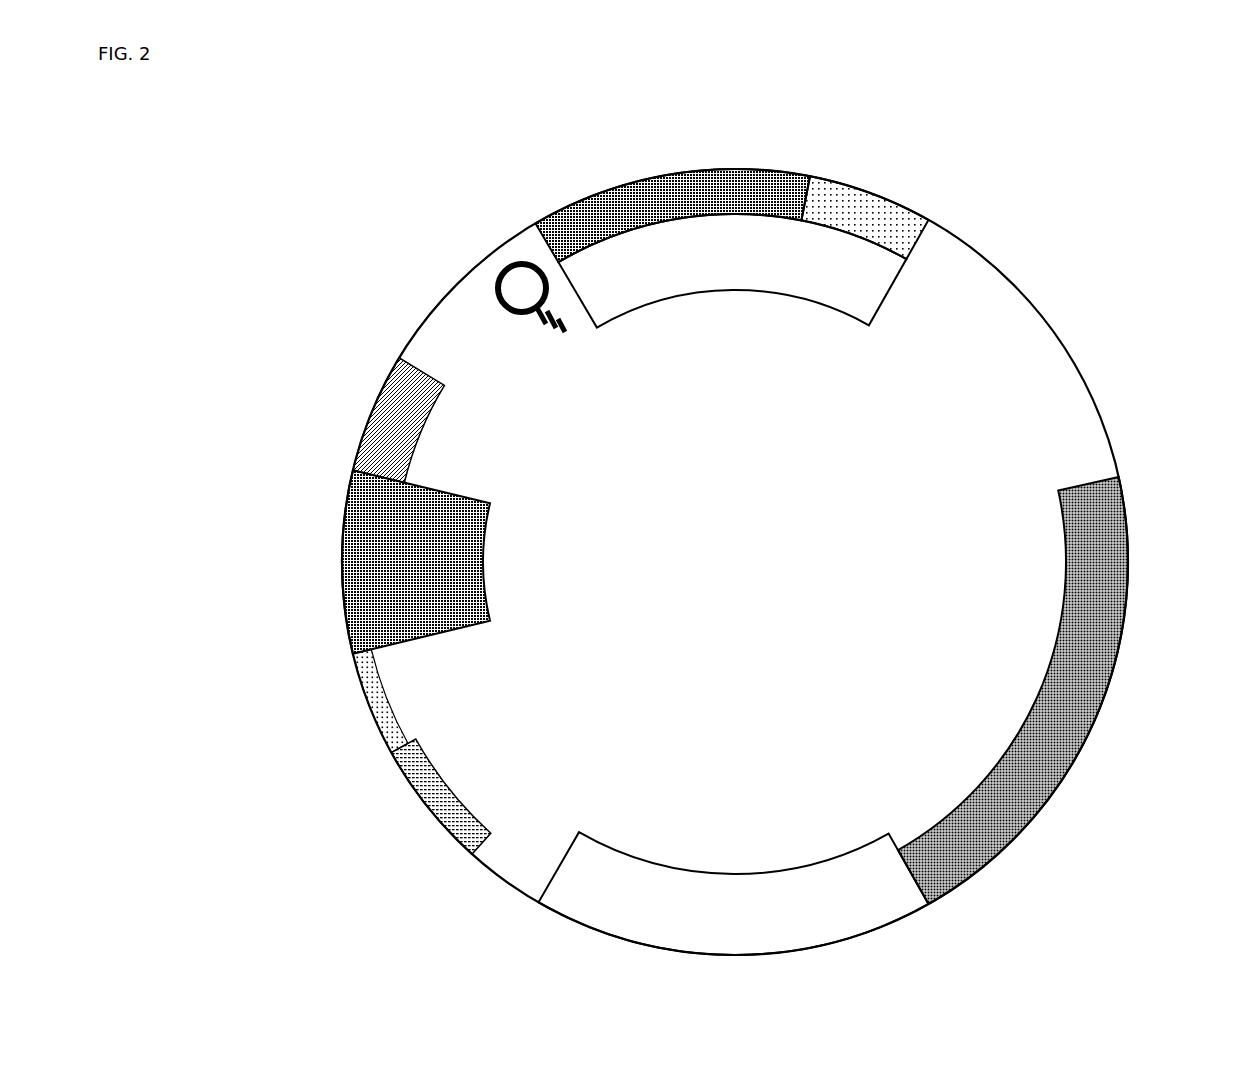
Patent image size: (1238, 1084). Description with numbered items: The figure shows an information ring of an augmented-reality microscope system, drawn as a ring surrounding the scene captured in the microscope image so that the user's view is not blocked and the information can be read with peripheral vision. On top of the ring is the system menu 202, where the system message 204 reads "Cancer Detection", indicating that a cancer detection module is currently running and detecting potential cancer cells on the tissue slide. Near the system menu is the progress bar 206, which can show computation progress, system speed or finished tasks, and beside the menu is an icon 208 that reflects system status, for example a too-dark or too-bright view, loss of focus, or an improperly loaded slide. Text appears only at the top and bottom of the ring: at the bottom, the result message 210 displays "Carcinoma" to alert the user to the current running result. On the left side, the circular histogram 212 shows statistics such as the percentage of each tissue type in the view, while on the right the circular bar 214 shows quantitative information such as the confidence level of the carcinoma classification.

The system menu 202 is at (823, 171).
The system message 204 is at (877, 265).
The progress bar 206 is at (620, 183).
The icon 208 is at (500, 265).
The result message 210 is at (832, 917).
The circular histogram 212 is at (337, 597).
The circular bar 214 is at (1115, 477).